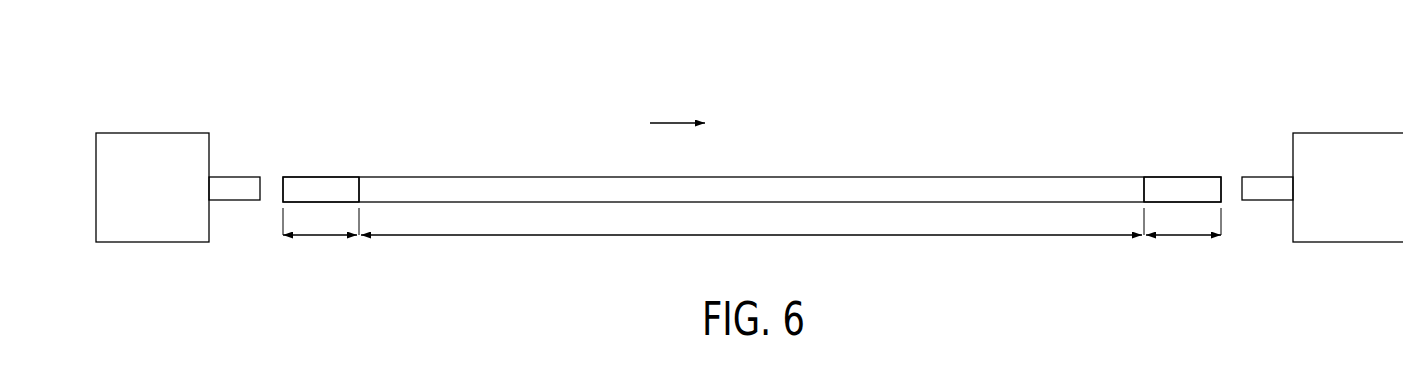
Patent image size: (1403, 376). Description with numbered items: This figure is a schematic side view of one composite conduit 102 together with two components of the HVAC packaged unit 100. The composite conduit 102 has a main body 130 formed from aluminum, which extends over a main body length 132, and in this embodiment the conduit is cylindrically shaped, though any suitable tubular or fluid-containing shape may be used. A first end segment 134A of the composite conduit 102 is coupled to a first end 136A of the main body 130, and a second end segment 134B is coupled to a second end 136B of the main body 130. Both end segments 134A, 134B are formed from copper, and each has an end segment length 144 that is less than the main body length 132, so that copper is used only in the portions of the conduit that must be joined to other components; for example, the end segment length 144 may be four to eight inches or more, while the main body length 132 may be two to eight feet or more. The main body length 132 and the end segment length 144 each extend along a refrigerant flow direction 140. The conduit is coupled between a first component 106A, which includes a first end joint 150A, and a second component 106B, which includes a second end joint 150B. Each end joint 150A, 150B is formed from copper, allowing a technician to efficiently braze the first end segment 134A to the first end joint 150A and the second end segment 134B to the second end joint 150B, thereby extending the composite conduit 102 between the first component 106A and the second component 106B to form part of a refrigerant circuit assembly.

The HVAC packaged unit 100 is at (840, 63).
The composite conduit 102 is at (747, 130).
The first component 106A is at (122, 143).
The second component 106B is at (1380, 143).
The main body 130 is at (775, 175).
The main body length 132 is at (750, 237).
The first end segment 134A is at (328, 175).
The second end segment 134B is at (1173, 175).
The first end 136A is at (360, 177).
The second end 136B is at (1142, 177).
The refrigerant flow direction 140 is at (672, 121).
The end segment length 144 is at (325, 238).
The first end joint 150A is at (220, 170).
The second end joint 150B is at (1283, 170).